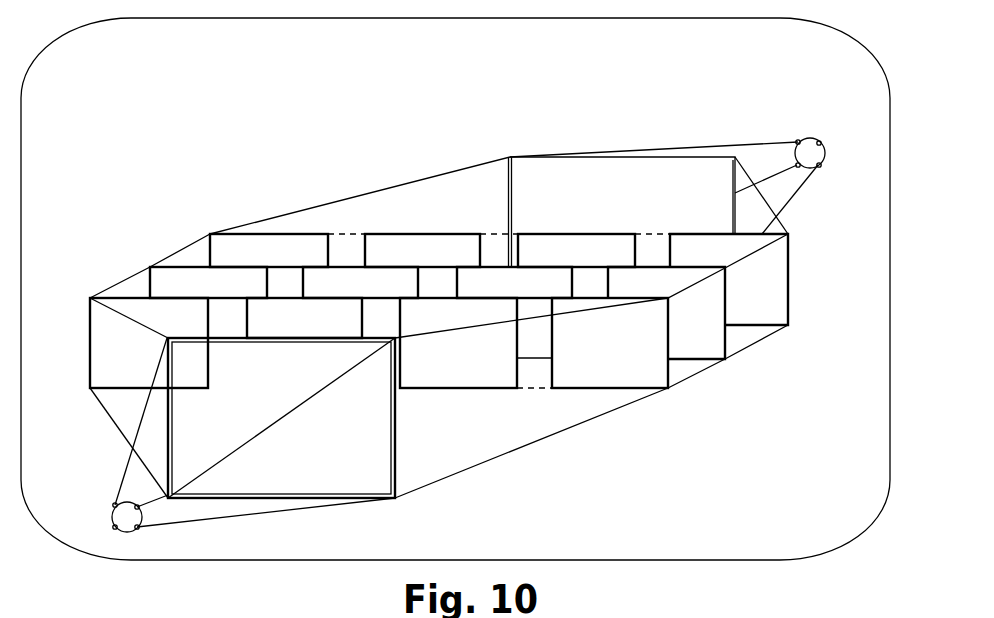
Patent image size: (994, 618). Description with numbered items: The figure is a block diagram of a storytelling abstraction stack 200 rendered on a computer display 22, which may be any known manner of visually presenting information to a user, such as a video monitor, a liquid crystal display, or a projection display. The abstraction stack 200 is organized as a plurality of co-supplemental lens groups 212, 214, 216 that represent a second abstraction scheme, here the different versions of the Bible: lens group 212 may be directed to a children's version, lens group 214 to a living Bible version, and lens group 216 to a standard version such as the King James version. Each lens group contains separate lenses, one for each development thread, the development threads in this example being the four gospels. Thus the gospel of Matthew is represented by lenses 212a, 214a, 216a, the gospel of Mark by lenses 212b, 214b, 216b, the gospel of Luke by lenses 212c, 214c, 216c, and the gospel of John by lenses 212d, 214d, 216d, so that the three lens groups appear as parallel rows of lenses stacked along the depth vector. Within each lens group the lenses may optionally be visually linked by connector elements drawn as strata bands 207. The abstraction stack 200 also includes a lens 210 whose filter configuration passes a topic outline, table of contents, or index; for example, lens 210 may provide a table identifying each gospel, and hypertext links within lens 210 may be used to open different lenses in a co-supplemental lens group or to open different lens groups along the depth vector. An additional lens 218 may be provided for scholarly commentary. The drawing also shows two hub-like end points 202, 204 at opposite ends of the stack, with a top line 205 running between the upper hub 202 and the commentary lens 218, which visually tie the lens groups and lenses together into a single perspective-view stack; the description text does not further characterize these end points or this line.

The computer display 22 is at (829, 550).
The abstraction stack 200 is at (121, 176).
The light source / projector hub 202 is at (805, 139).
The light source / projector hub 204 is at (143, 523).
The top support line 205 is at (654, 148).
The strata bands 207 is at (348, 230).
The lens 210 is at (364, 470).
The lens group 212 is at (406, 367).
The lens 212a is at (581, 378).
The lens 212b is at (431, 378).
The lens 212c is at (278, 332).
The lens 212d is at (101, 356).
The lens group 214 is at (471, 336).
The lens 214a is at (616, 294).
The lens 214b is at (472, 294).
The lens 214c is at (325, 294).
The lens 214d is at (172, 294).
The lens group 216 is at (530, 302).
The lens 216a is at (678, 266).
The lens 216b is at (555, 264).
The lens 216c is at (392, 264).
The lens 216d is at (249, 264).
The lens 218 is at (535, 178).